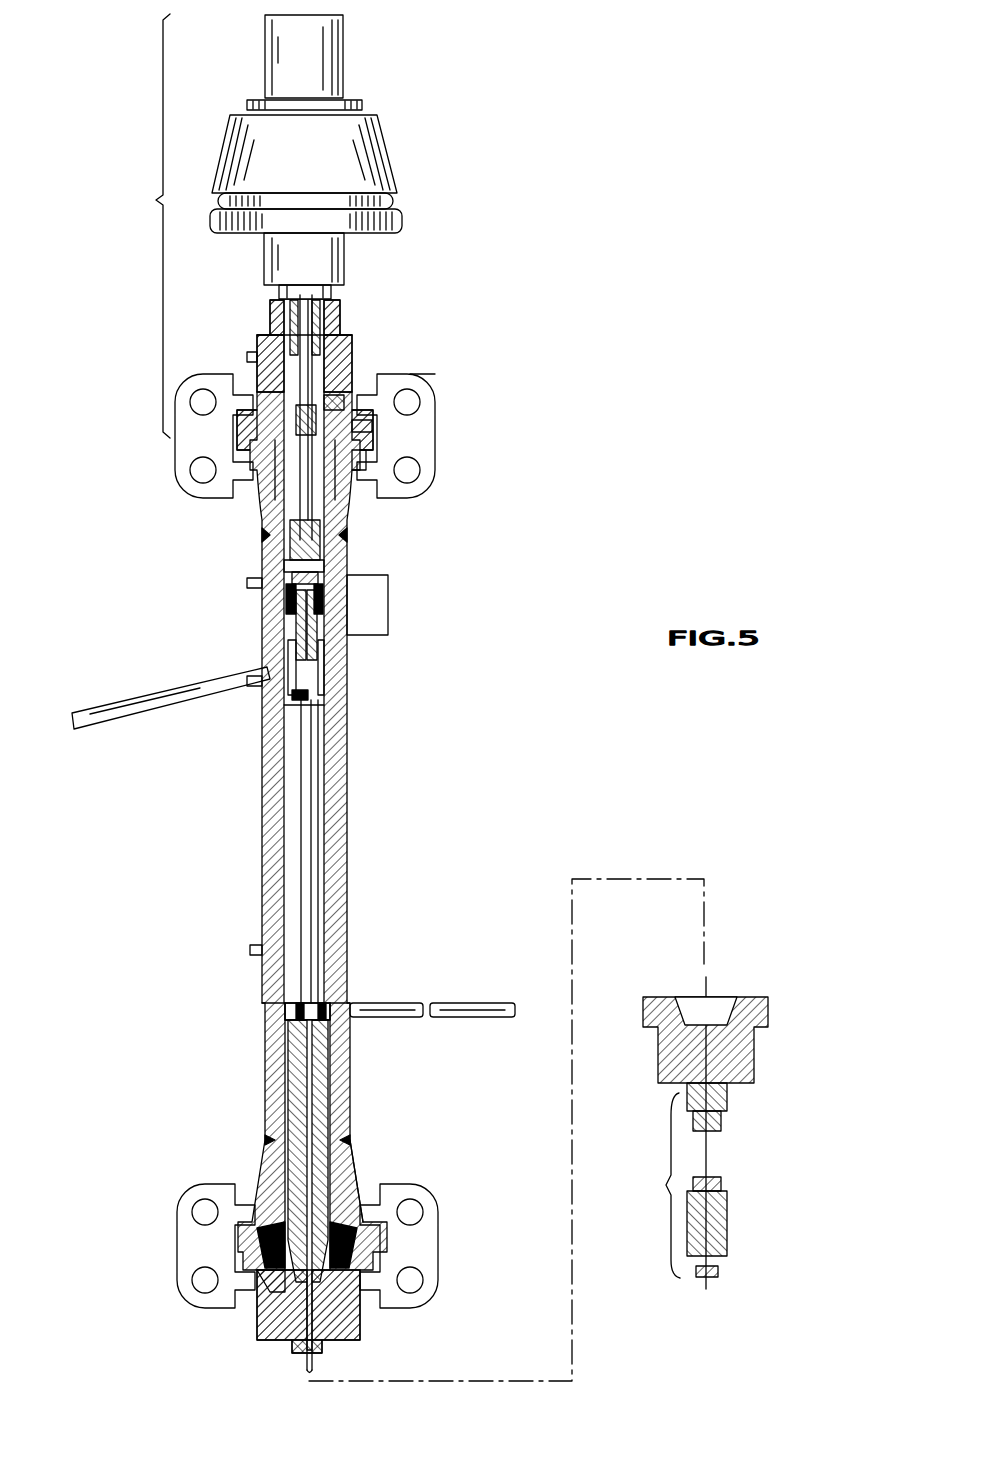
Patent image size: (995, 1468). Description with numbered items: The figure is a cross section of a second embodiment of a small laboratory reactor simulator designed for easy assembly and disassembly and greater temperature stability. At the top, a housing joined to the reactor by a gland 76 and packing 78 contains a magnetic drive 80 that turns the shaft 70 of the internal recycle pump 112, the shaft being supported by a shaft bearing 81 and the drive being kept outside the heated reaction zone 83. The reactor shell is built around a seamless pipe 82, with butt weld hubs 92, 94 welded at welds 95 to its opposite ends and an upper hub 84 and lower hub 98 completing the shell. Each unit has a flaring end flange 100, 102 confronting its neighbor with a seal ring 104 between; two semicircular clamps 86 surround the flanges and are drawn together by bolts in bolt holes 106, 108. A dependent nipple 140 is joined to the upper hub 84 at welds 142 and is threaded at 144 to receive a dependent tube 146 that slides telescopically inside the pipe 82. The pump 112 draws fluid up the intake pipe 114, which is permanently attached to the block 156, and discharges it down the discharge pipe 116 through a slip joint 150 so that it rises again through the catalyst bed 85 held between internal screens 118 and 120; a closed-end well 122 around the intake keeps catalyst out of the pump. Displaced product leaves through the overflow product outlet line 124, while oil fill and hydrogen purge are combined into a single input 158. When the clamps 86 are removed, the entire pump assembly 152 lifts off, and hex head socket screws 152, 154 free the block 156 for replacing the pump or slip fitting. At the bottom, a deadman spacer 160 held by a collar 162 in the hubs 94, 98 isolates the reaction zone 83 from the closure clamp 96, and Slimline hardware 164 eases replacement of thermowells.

The shaft 70 is at (315, 300).
The gland 76 is at (352, 300).
The packing 78 is at (352, 343).
The magnetic drive 80 is at (393, 138).
The shaft bearing 81 is at (270, 345).
The seamless pipe 82 is at (388, 603).
The reaction zone 83 is at (288, 775).
The upper hub 84 is at (340, 330).
The catalyst bed 85 is at (288, 878).
The semicircular clamps 86 is at (437, 412).
The butt weld hub 92 is at (352, 525).
The butt weld hub 94 is at (360, 1175).
The welds 95 is at (348, 555).
The clamp 96 is at (440, 1222).
The hub 98 is at (362, 1320).
The flaring end flange 100 is at (370, 432).
The flaring end flange 102 is at (365, 470).
The seal ring 104 is at (370, 445).
The bolt holes 106 is at (190, 400).
The bolt holes 108 is at (190, 470).
The internal recycle pump 112 is at (350, 598).
The intake pipe 114 is at (275, 650).
The discharge pipe 116 is at (348, 663).
The internal screen 118 is at (348, 727).
The internal screen 120 is at (290, 998).
The well 122 is at (348, 692).
The overflow product outlet line 124 is at (163, 702).
The dependent nipple 140 is at (372, 424).
The welds 142 is at (355, 410).
The threads 144 is at (260, 485).
The dependent tube 146 is at (348, 578).
The slip joint 150 is at (442, 655).
The pump assembly 152 is at (275, 632).
The hex head socket screw 154 is at (348, 620).
The block 156 is at (270, 598).
The single input 158 is at (470, 1003).
The deadman spacer 160 is at (300, 1118).
The collar 162 is at (262, 1292).
The Slimline hardware 164 is at (687, 1133).